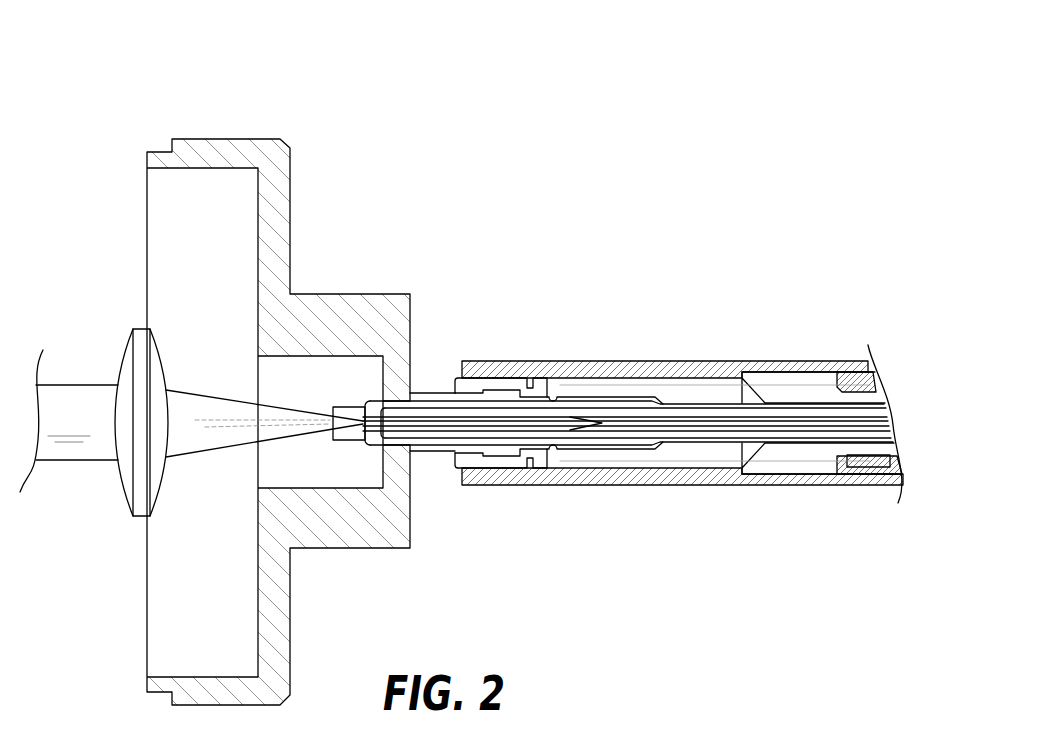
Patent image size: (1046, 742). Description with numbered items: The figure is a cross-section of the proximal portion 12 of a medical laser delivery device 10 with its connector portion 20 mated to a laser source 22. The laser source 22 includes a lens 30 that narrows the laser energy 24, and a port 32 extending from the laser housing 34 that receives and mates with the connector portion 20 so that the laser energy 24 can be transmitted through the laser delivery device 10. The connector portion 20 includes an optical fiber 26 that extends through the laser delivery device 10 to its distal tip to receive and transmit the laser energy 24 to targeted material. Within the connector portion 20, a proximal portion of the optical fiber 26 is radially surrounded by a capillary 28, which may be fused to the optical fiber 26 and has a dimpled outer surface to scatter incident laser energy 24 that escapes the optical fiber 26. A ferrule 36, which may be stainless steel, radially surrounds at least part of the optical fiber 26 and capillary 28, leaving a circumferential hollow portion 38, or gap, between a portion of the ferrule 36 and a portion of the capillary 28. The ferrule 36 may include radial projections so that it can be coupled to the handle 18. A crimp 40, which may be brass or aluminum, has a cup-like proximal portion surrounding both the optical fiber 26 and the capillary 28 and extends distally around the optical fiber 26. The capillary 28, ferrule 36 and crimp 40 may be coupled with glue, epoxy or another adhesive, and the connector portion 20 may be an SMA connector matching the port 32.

The laser delivery device 10 is at (564, 230).
The proximal portion 12 is at (693, 292).
The handle 18 is at (703, 487).
The connector portion 20 is at (418, 474).
The laser source 22 is at (226, 116).
The laser energy 24 is at (57, 397).
The optical fiber 26 is at (612, 440).
The capillary 28 is at (462, 467).
The lens 30 is at (137, 517).
The port 32 is at (421, 394).
The laser housing 34 is at (279, 217).
The ferrule 36 is at (531, 396).
The circumferential hollow portion 38 is at (465, 412).
The crimp 40 is at (602, 417).